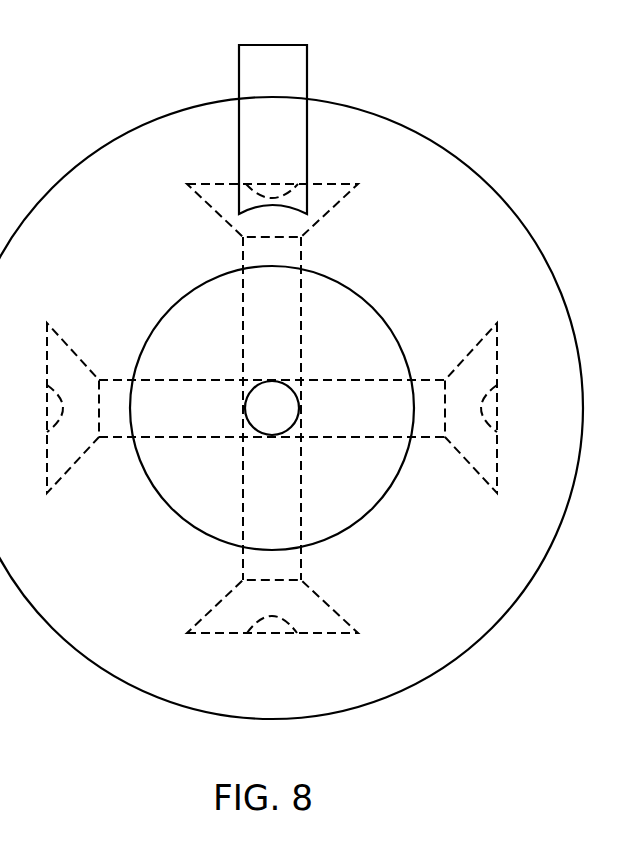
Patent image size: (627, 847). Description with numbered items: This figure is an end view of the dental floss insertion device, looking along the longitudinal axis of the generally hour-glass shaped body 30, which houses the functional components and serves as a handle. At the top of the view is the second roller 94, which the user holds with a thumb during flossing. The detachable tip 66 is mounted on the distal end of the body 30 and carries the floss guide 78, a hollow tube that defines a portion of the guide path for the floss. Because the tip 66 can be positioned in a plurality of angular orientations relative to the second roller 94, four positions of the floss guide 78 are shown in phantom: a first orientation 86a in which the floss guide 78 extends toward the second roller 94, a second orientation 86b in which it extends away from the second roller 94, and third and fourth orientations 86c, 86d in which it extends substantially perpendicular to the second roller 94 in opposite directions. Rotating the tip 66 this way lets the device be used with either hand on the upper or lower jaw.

The body 30 is at (452, 148).
The second roller 94 is at (289, 58).
The tip 66 is at (173, 490).
The floss guide 78 is at (243, 323).
The first orientation 86a is at (315, 203).
The second orientation 86b is at (322, 618).
The third orientation 86c is at (483, 365).
The fourth orientation 86d is at (74, 450).